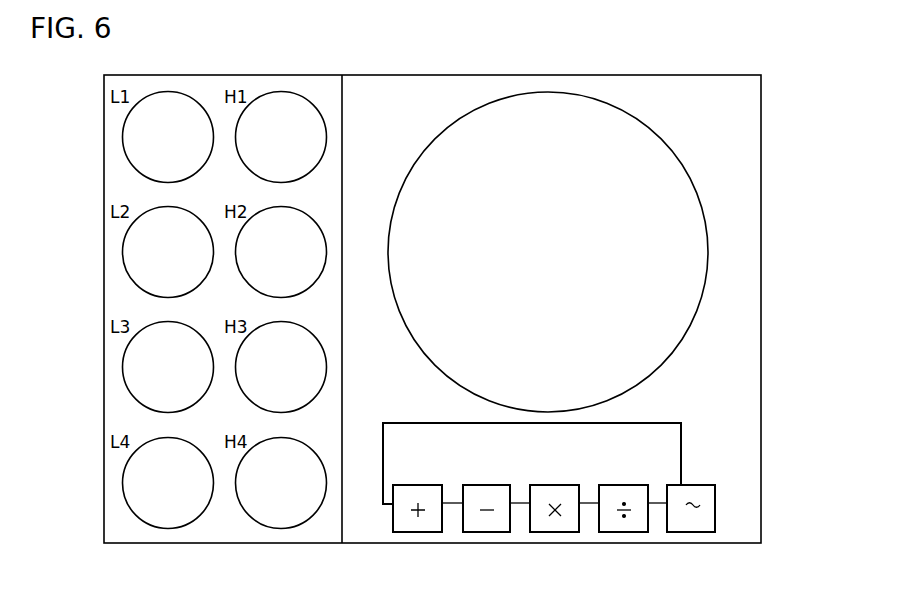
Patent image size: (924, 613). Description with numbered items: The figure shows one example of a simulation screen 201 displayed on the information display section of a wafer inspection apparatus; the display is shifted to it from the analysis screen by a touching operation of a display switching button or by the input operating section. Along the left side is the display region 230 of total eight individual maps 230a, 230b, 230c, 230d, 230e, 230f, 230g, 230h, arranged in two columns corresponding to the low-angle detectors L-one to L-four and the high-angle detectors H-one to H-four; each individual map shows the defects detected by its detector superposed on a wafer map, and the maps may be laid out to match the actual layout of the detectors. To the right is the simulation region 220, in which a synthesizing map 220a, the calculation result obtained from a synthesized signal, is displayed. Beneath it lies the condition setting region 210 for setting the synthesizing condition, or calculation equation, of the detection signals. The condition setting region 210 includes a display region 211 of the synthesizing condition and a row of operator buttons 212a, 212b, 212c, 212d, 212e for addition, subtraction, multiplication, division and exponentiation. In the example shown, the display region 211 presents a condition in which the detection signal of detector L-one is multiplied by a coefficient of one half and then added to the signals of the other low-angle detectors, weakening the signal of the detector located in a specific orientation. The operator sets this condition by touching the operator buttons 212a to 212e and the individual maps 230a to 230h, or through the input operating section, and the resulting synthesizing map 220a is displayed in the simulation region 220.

The simulation screen 201 is at (695, 75).
The simulation region 220 is at (757, 135).
The synthesizing map 220a is at (421, 152).
The display region of individual maps 230 is at (329, 77).
The individual map 230a is at (124, 137).
The individual map 230b is at (124, 252).
The individual map 230c is at (124, 367).
The individual map 230d is at (124, 484).
The individual map 230e is at (324, 122).
The individual map 230f is at (324, 240).
The individual map 230g is at (324, 356).
The individual map 230h is at (316, 452).
The condition setting region 210 is at (687, 450).
The display region of the synthesizing condition 211 is at (652, 423).
The operator button 212a is at (420, 533).
The operator button 212b is at (490, 533).
The operator button 212c is at (557, 533).
The operator button 212d is at (633, 533).
The operator button 212e is at (705, 533).